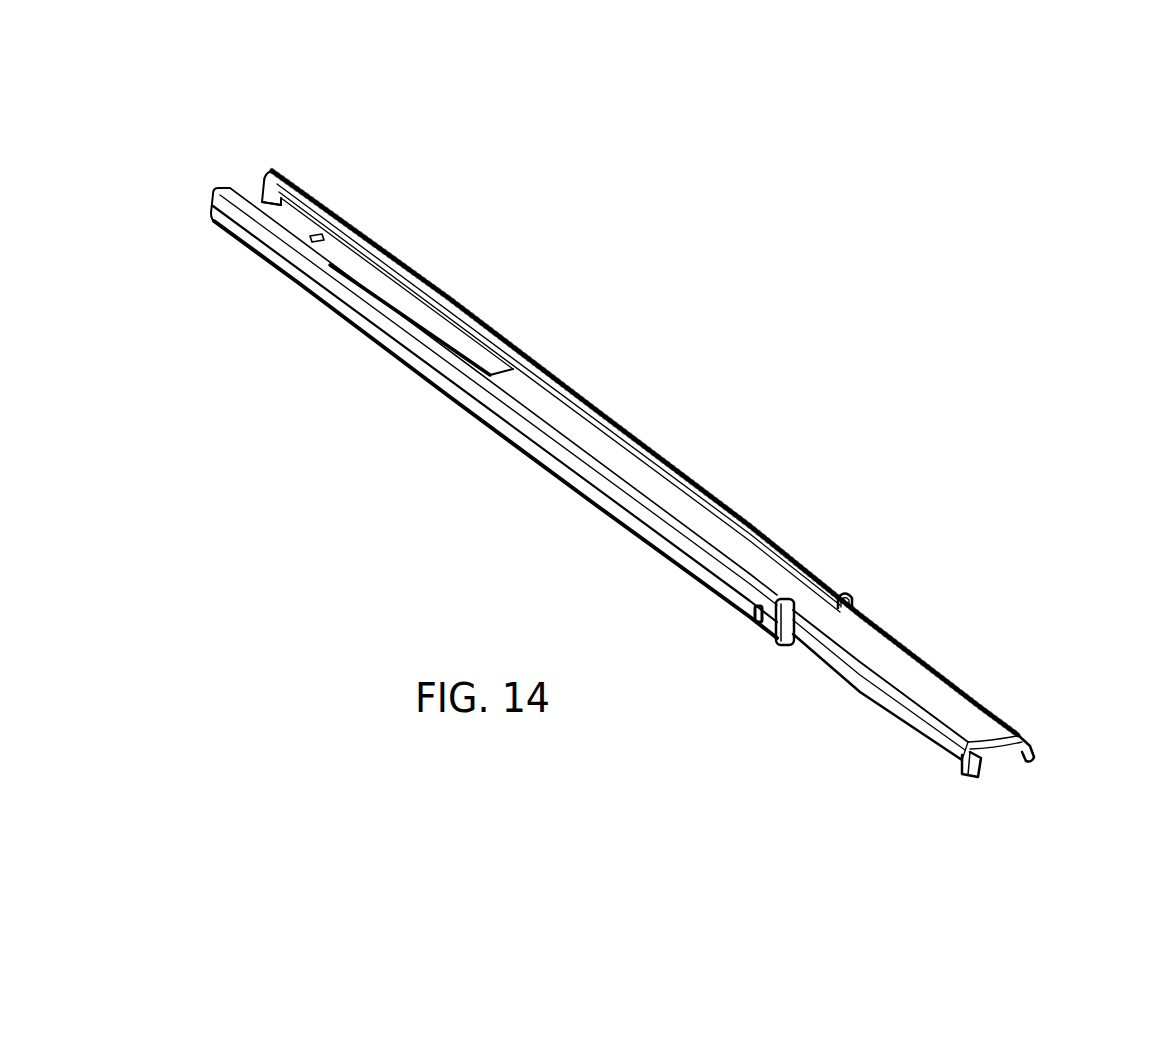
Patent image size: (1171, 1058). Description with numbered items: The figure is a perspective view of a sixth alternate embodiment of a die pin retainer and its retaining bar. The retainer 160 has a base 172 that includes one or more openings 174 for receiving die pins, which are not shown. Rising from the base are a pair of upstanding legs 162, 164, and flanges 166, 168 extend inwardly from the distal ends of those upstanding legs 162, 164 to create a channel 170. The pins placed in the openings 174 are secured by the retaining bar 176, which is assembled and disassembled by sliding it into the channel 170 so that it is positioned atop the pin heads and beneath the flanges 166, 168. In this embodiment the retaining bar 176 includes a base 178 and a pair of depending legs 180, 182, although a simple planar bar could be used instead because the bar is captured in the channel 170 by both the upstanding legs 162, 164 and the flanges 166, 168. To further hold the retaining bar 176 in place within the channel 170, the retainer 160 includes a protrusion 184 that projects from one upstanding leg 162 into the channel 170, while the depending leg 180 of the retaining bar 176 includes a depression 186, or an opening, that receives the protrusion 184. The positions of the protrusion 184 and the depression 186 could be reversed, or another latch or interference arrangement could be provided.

The retainer 160 is at (390, 248).
The upstanding leg 162 is at (783, 641).
The upstanding leg 164 is at (855, 606).
The flange 166 is at (214, 188).
The flange 168 is at (268, 176).
The channel 170 is at (262, 192).
The base 172 is at (455, 345).
The opening 174 is at (402, 304).
The retaining bar 176 is at (540, 400).
The base 178 is at (935, 690).
The depending leg 180 is at (925, 740).
The depending leg 182 is at (1042, 752).
The protrusion 184 is at (752, 622).
The depression 186 is at (962, 775).